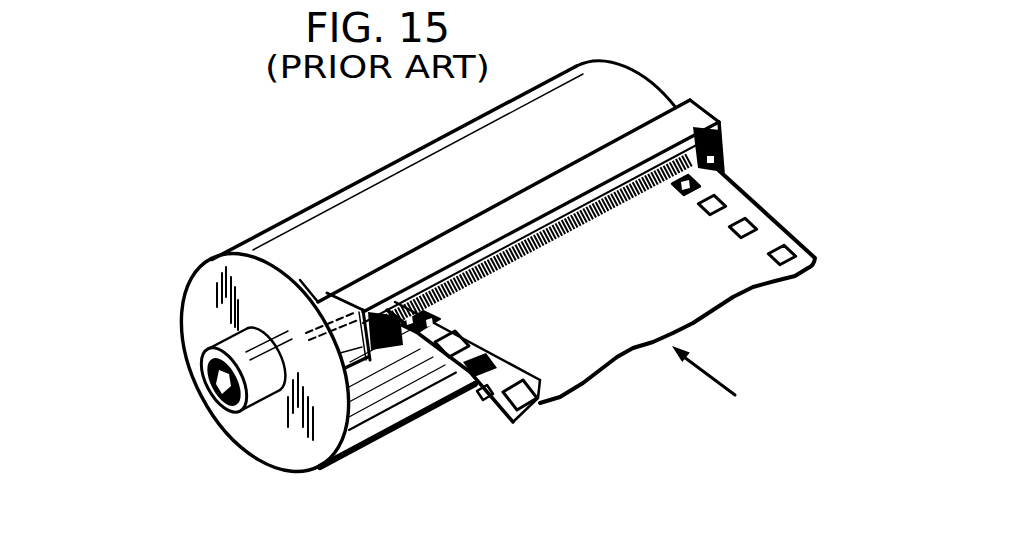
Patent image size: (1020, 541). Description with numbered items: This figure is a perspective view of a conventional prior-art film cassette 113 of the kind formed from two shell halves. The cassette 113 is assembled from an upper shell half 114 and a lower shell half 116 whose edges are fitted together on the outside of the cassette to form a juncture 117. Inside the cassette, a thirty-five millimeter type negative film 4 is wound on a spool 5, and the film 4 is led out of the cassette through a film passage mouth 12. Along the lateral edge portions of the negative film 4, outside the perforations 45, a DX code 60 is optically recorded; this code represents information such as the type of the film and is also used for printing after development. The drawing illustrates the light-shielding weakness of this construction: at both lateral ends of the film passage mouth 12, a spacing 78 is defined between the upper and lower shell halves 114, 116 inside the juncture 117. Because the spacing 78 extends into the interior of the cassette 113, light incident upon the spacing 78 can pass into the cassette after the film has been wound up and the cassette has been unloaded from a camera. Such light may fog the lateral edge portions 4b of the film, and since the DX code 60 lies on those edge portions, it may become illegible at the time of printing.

The negative film 4 is at (707, 298).
The lateral edge portions 4b is at (502, 418).
The spool 5 is at (212, 411).
The film passage mouth 12 is at (538, 235).
The perforations 45 is at (540, 402).
The DX code 60 is at (480, 391).
The spacing 78 is at (392, 312).
The cassette 113 is at (121, 443).
The upper shell half 114 is at (201, 339).
The lower shell half 116 is at (260, 437).
The juncture 117 is at (297, 290).